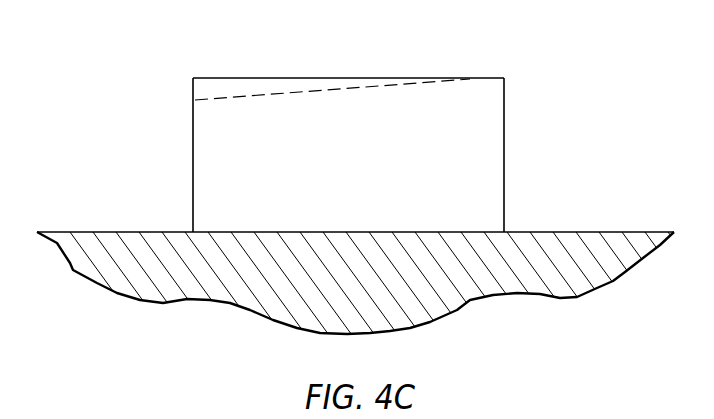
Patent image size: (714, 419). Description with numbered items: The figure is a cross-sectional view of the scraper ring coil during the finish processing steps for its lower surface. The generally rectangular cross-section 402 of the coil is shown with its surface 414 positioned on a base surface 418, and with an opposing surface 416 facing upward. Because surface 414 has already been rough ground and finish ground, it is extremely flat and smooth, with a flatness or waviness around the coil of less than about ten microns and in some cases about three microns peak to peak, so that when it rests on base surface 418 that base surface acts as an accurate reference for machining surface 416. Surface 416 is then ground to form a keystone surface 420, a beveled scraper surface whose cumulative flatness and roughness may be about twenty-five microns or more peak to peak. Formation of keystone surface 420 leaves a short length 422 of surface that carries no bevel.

The cross-section 402 is at (478, 128).
The surface 414 is at (290, 232).
The opposing surface 416 is at (290, 78).
The base surface 418 is at (423, 297).
The keystone surface 420 is at (243, 97).
The short length 422 is at (483, 78).